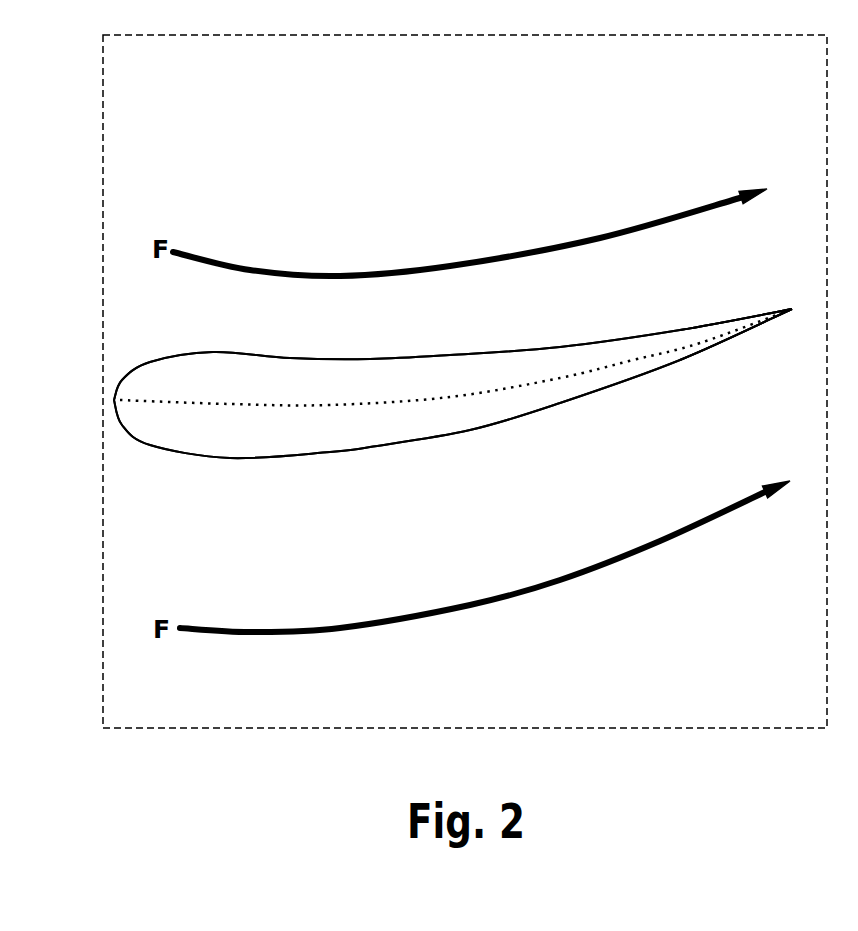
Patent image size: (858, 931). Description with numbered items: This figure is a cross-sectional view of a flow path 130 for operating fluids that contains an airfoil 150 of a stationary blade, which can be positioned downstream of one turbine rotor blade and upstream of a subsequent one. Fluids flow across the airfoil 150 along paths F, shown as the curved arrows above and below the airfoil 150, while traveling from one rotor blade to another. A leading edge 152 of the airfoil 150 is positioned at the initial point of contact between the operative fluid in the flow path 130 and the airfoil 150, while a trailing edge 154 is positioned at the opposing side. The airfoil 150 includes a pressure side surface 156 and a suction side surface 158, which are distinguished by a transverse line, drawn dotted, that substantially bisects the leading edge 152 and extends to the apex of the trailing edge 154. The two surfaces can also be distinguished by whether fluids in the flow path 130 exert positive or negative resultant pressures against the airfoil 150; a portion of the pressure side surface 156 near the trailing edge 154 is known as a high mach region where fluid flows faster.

The flow path 130 is at (254, 204).
The airfoil 150 is at (107, 463).
The leading edge 152 is at (127, 378).
The trailing edge 154 is at (780, 310).
The pressure side surface 156 is at (342, 394).
The suction side surface 158 is at (342, 444).